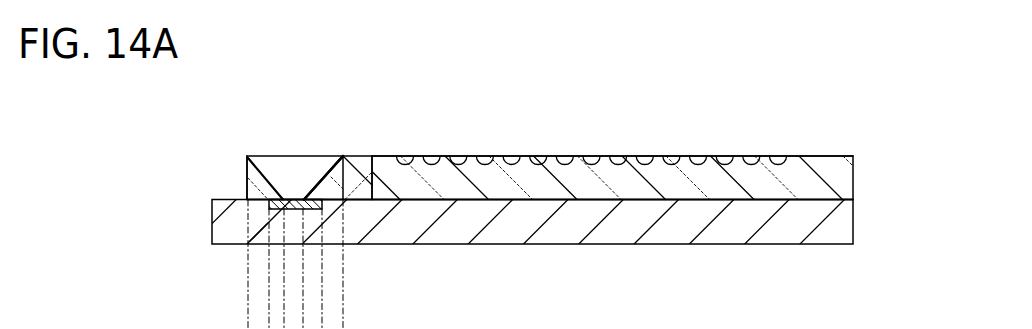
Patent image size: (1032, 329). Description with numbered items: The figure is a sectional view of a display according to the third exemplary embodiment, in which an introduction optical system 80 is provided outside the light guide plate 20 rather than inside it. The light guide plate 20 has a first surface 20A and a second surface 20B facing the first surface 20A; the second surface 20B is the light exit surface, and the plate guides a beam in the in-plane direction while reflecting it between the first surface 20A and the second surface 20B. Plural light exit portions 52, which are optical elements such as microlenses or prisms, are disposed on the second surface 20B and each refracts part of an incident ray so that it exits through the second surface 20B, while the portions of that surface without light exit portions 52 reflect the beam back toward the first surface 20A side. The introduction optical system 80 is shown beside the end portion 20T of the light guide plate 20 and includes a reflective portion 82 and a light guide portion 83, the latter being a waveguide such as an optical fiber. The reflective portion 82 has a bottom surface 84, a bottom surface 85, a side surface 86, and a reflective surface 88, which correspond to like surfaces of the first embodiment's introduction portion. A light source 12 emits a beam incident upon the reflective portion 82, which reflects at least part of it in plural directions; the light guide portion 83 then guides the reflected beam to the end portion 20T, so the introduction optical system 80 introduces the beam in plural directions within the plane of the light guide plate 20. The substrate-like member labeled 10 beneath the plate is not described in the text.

The substrate 10 is at (845, 228).
The light source 12 is at (296, 212).
The light guide plate 20 is at (838, 173).
The first surface 20A is at (832, 200).
The second surface 20B is at (831, 155).
The end portion 20T is at (373, 180).
The light exit portions 52 is at (619, 156).
The introduction optical system 80 is at (418, 80).
The reflective portion 82 is at (286, 149).
The light guide portion 83 is at (373, 170).
The bottom surface 84 is at (267, 155).
The bottom surface 85 is at (268, 216).
The side surface 86 is at (323, 178).
The reflective surface 88 is at (325, 178).